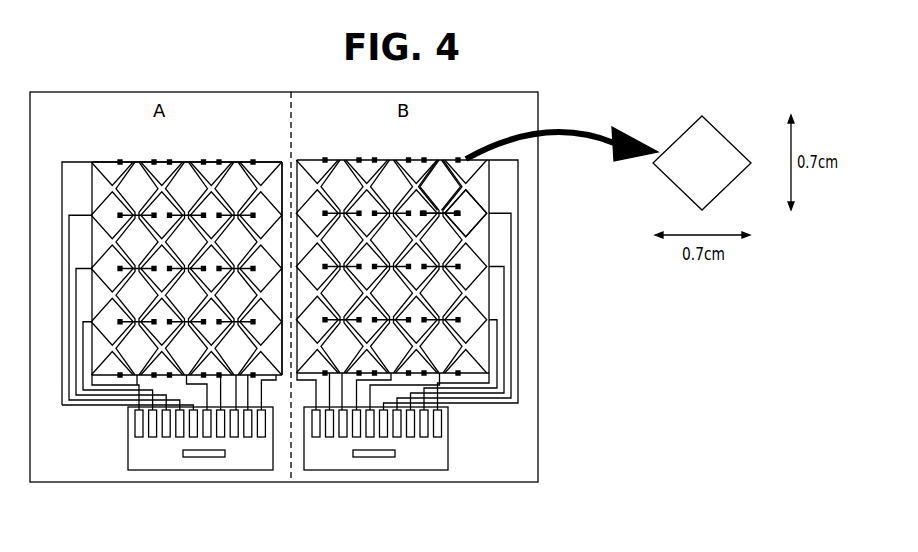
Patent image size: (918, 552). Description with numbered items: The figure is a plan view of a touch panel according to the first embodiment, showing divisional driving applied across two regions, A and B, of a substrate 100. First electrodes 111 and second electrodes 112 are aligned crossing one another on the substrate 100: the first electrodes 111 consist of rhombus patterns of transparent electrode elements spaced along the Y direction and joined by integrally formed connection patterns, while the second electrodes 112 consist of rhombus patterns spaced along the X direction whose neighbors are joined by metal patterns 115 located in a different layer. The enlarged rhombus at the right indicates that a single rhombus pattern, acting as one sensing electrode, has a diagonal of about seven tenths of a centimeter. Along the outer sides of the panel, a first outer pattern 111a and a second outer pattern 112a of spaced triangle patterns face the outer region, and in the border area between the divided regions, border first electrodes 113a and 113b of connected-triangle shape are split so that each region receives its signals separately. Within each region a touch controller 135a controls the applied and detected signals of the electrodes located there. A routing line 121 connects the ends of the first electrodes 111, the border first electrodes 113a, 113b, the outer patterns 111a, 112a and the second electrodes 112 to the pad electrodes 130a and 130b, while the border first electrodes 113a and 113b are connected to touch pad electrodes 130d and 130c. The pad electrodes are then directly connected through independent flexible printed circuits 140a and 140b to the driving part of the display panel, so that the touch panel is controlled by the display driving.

The substrate 100 is at (539, 332).
The first electrode 111 is at (433, 180).
The first outer pattern 111a is at (92, 180).
The second electrode 112 is at (468, 207).
The second outer pattern 112a is at (213, 163).
The border first electrode 113a is at (280, 175).
The border first electrode 113b is at (305, 170).
The metal pattern 115 is at (457, 213).
The routing line 121 is at (518, 288).
The pad electrode 130a is at (135, 425).
The pad electrode 130b is at (441, 425).
The touch pad electrode 130c is at (316, 437).
The touch pad electrode 130d is at (262, 437).
The touch controller 135a is at (183, 452).
The flexible printed circuit 140a is at (200, 465).
The flexible printed circuit 140b is at (378, 470).